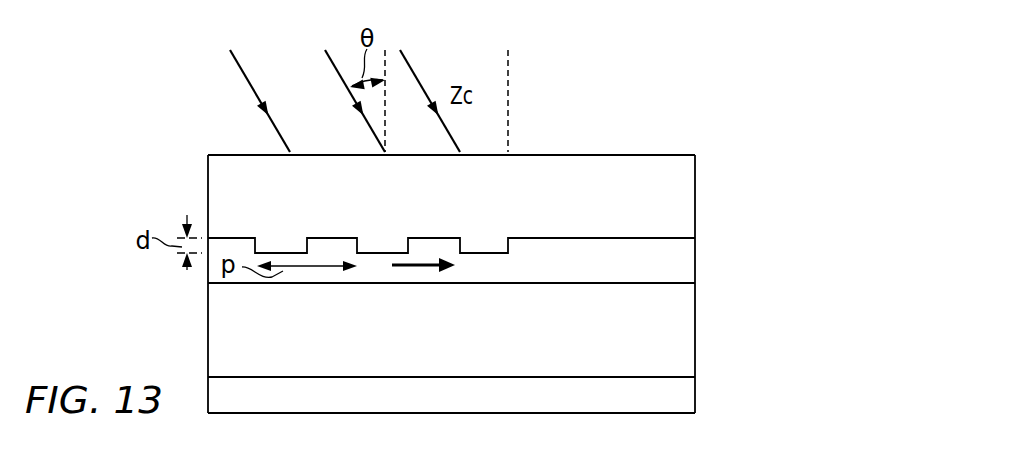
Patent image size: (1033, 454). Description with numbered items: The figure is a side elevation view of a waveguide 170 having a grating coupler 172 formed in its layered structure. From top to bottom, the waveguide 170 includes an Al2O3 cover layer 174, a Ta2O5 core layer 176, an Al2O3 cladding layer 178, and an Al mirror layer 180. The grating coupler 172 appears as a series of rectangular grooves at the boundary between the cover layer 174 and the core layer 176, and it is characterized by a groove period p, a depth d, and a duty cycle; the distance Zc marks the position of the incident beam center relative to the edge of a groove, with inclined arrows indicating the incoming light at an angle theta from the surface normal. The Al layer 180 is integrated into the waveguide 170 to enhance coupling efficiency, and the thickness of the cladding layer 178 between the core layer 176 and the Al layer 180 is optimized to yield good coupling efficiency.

The waveguide 170 is at (641, 108).
The grating coupler 172 is at (280, 246).
The Al2O3 cover layer 174 is at (218, 183).
The Ta2O5 core layer 176 is at (213, 276).
The Al2O3 cladding layer 178 is at (223, 340).
The Al mirror layer 180 is at (678, 397).